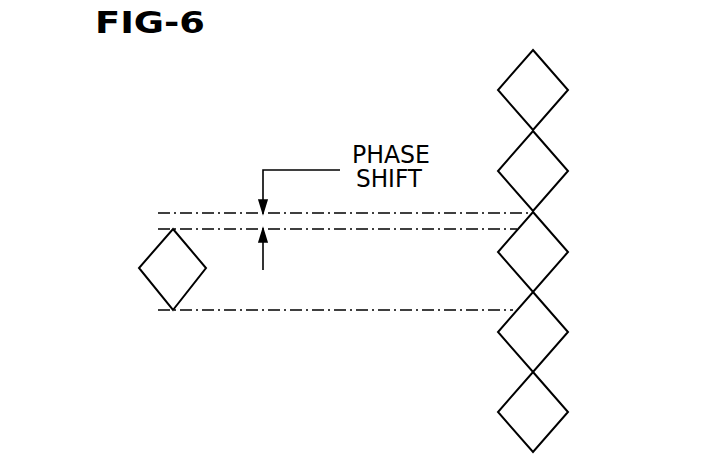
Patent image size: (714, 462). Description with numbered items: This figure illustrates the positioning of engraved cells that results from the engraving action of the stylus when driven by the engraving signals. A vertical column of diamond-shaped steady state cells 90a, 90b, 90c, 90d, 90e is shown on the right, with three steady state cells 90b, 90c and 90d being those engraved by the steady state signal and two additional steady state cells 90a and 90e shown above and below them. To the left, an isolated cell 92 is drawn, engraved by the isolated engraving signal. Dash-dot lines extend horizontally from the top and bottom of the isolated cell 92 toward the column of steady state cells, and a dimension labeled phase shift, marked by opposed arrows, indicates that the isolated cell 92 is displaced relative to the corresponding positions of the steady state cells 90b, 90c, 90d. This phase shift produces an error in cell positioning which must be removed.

The steady state cell 90a is at (557, 72).
The steady state cell 90b is at (557, 153).
The steady state cell 90c is at (558, 230).
The steady state cell 90d is at (553, 310).
The steady state cell 90e is at (553, 390).
The isolated cell 92 is at (152, 292).